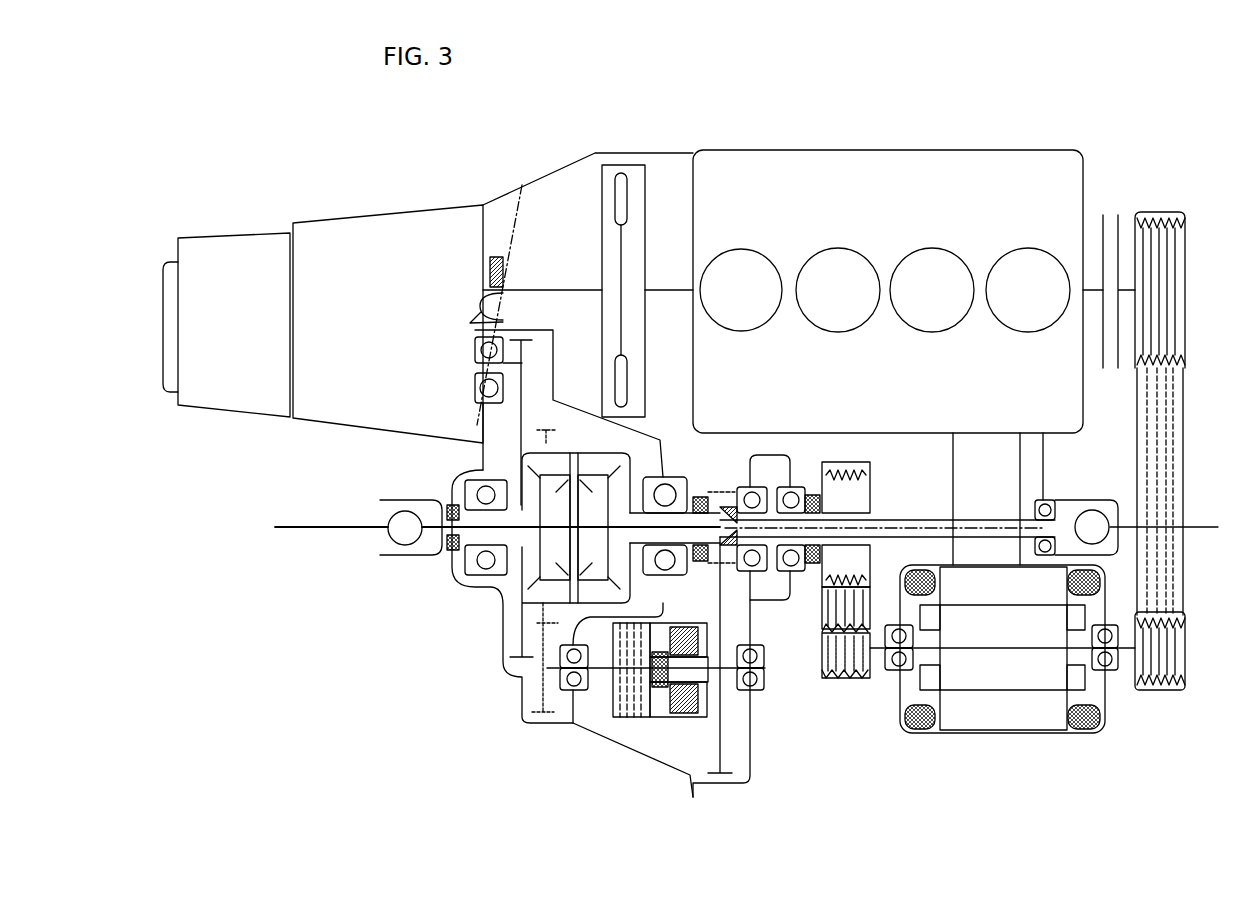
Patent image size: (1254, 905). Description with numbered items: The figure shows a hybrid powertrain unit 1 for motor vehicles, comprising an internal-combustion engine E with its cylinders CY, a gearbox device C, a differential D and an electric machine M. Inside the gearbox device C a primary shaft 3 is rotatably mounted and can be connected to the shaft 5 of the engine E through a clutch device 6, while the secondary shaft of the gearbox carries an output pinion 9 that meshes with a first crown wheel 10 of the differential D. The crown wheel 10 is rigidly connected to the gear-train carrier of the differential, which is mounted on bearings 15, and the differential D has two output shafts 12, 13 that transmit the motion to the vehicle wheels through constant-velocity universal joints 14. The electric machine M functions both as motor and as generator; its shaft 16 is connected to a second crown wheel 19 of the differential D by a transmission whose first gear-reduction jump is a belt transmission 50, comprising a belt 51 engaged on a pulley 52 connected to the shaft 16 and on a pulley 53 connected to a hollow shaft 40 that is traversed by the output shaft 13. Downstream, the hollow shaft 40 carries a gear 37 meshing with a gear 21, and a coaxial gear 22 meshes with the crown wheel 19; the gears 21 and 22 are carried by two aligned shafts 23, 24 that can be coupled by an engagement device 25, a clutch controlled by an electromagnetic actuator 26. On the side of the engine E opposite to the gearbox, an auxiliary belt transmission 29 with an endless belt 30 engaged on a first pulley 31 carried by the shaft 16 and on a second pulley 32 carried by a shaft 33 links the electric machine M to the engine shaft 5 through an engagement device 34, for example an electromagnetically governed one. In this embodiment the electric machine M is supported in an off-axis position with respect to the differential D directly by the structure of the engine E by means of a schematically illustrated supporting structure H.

The hybrid powertrain unit 1 is at (265, 175).
The primary shaft 3 is at (543, 288).
The shaft of the engine 5 is at (668, 288).
The clutch device 6 is at (645, 190).
The output pinion 9 is at (521, 360).
The first crown wheel 10 is at (526, 413).
The output shaft 12 is at (460, 535).
The output shaft 13 is at (900, 527).
The constant-velocity universal joints 14 is at (400, 530).
The bearings 15 is at (681, 470).
The shaft of the electric machine 16 is at (985, 650).
The second crown wheel 19 is at (550, 437).
The gear 21 is at (730, 748).
The gear 22 is at (545, 695).
The shaft 23 is at (745, 680).
The shaft 24 is at (649, 708).
The engagement device 25 is at (630, 720).
The electromagnetic actuator 26 is at (688, 720).
The auxiliary belt transmission 29 is at (1188, 491).
The endless belt 30 is at (1170, 572).
The first pulley 31 is at (1160, 695).
The second pulley 32 is at (1165, 268).
The shaft 33 is at (1088, 325).
The engagement device 34 is at (1110, 210).
The gear 37 is at (733, 508).
The hollow shaft 40 is at (848, 503).
The belt transmission 50 is at (832, 684).
The belt 51 is at (825, 605).
The pulley 52 is at (852, 668).
The pulley 53 is at (815, 498).
The gearbox device C is at (165, 305).
The cylinder CY is at (815, 250).
The differential D is at (507, 582).
The internal-combustion engine E is at (903, 273).
The supporting structure H is at (990, 460).
The electric machine M is at (1002, 675).